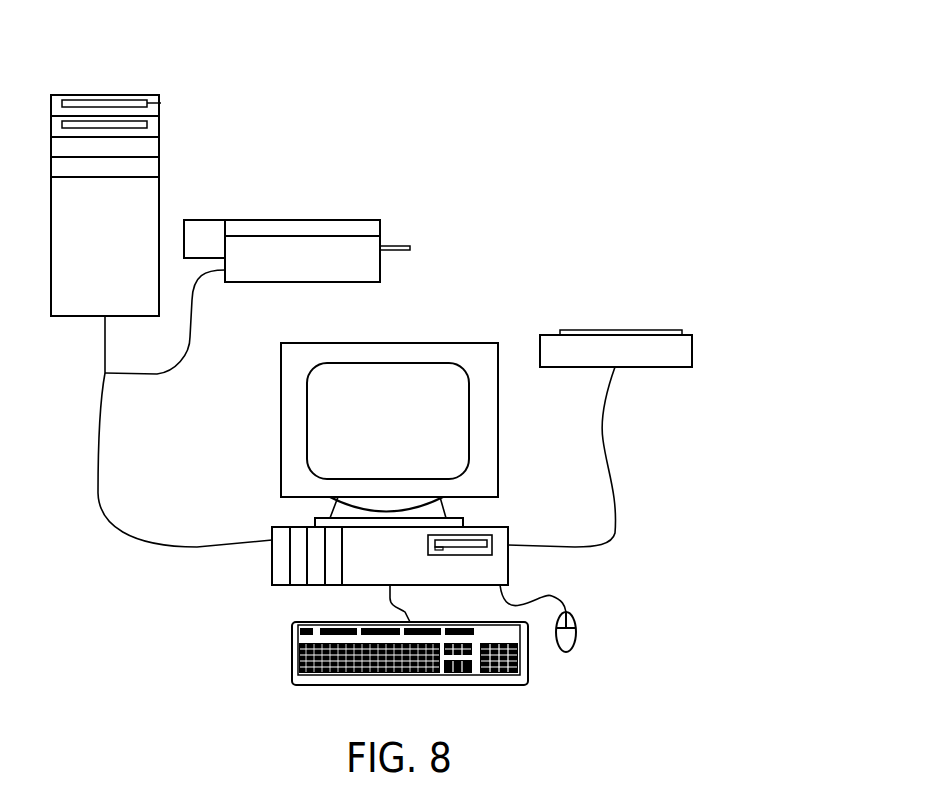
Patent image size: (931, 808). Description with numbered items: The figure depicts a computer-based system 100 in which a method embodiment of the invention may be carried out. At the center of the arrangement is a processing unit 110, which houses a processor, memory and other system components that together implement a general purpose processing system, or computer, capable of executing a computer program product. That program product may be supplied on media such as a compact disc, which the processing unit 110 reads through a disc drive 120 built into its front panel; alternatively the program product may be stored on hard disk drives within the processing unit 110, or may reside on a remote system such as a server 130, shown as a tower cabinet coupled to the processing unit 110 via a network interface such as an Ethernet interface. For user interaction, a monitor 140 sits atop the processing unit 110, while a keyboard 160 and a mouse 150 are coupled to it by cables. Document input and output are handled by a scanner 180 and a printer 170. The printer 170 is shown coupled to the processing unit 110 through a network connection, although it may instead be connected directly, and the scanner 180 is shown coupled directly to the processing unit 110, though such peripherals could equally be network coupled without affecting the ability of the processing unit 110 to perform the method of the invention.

The computer-based system 100 is at (607, 134).
The processing unit 110 is at (272, 572).
The disc drive 120 is at (504, 542).
The server 130 is at (159, 198).
The monitor 140 is at (457, 343).
The mouse 150 is at (576, 640).
The keyboard 160 is at (292, 652).
The printer 170 is at (342, 220).
The scanner 180 is at (640, 330).